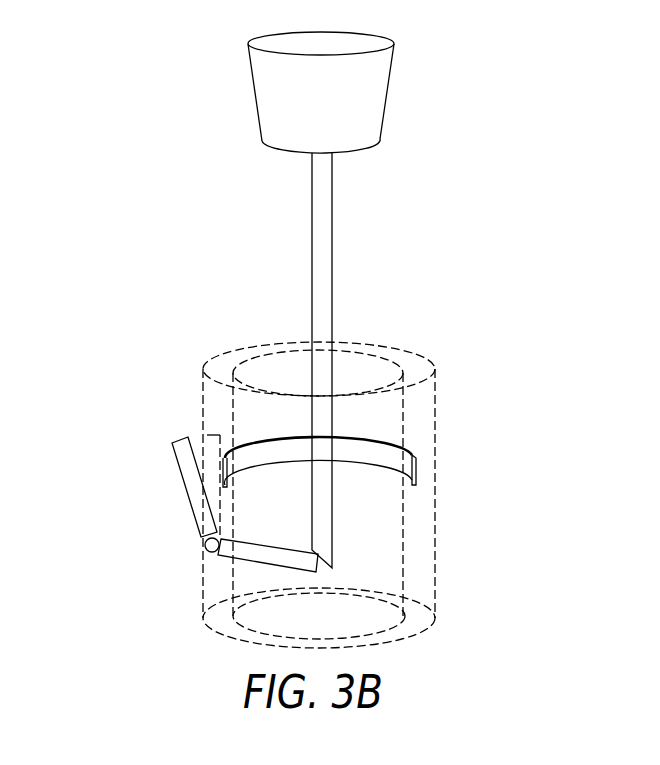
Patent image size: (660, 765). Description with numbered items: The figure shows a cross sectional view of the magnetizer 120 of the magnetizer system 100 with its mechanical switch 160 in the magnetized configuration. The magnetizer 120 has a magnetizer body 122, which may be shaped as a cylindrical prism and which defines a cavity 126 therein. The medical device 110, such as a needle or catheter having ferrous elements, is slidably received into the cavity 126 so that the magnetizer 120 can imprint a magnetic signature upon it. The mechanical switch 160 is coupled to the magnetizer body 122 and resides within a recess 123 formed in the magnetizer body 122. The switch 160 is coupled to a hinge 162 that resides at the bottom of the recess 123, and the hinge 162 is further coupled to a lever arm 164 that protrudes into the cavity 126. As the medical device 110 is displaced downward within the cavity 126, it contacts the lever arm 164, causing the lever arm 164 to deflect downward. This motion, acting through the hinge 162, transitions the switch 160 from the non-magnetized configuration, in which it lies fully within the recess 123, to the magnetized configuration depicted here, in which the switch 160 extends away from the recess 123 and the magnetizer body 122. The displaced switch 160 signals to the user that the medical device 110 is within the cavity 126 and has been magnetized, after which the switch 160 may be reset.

The magnetizer system 100 is at (508, 178).
The medical device 110 is at (330, 217).
The magnetizer 120 is at (354, 448).
The magnetizer body 122 is at (413, 365).
The recess 123 is at (208, 433).
The cavity 126 is at (387, 550).
The mechanical switch 160 is at (175, 458).
The hinge 162 is at (207, 542).
The lever arm 164 is at (252, 549).